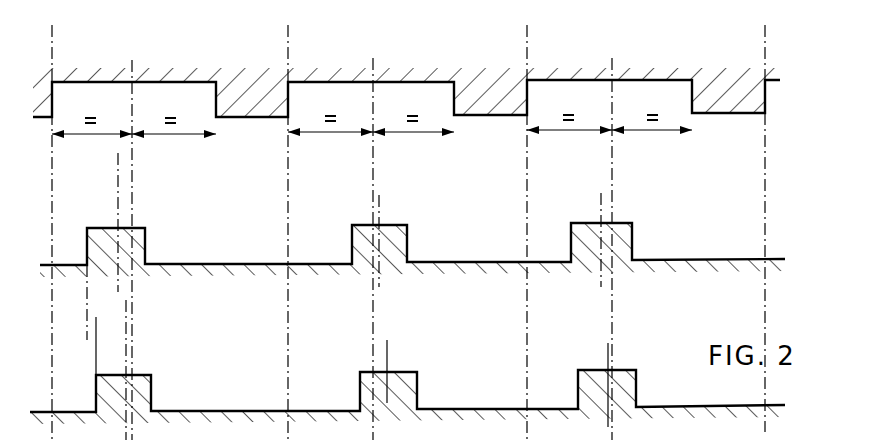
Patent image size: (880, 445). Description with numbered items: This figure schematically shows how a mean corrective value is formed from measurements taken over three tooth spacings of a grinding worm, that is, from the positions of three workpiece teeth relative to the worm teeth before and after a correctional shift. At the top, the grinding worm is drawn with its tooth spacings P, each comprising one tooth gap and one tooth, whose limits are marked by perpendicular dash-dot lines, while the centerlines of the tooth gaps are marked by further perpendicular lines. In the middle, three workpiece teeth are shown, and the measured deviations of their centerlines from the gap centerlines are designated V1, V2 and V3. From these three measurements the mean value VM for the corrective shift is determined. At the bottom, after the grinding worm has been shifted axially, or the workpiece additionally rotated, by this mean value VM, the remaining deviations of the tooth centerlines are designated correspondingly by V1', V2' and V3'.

The tooth spacing P is at (288, 43).
The measured deviation of the centerline V1 is at (135, 222).
The measured deviation of the centerline V2 is at (392, 240).
The measured deviation of the centerline V3 is at (617, 238).
The mean value for the corrective shift VM is at (63, 329).
The deviation of the centerline after the corrective shift V1' is at (159, 370).
The deviation of the centerline after the corrective shift V2' is at (400, 370).
The deviation of the centerline after the corrective shift V3' is at (627, 380).